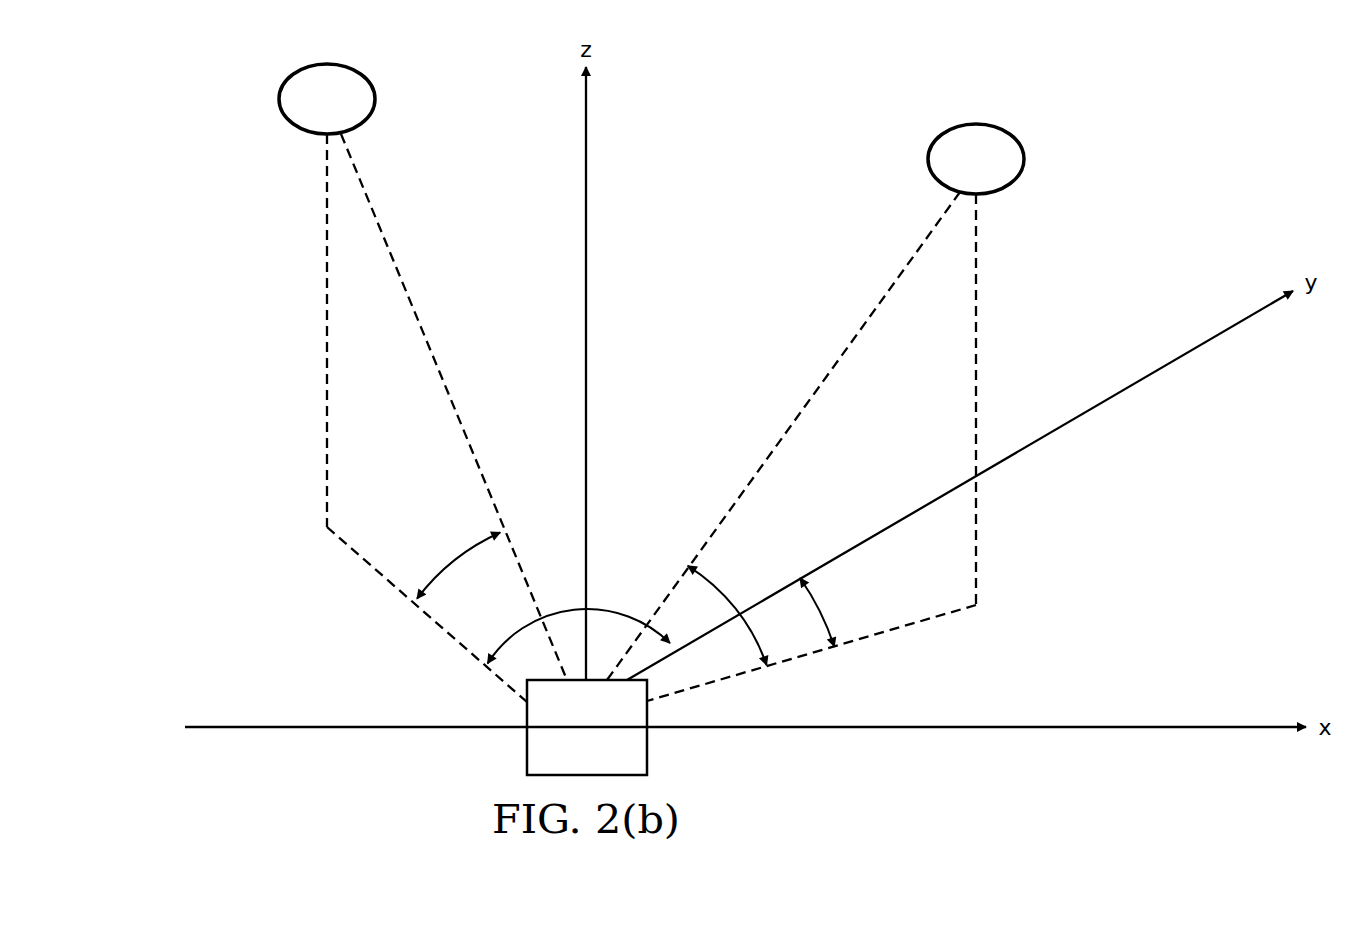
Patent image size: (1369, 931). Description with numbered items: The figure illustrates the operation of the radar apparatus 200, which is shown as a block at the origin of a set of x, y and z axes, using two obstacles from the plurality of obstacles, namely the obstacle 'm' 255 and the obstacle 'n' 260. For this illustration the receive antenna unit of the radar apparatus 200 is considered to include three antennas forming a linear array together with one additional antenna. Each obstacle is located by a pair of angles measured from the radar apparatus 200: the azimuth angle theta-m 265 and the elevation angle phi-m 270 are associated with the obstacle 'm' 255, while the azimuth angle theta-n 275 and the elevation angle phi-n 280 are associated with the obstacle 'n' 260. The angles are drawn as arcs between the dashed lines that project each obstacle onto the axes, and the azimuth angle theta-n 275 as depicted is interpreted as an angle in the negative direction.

The radar apparatus 200 is at (561, 745).
The obstacle 'm' 255 is at (1024, 166).
The obstacle 'n' 260 is at (280, 99).
The azimuth angle θm 265 is at (812, 603).
The elevation angle φm 270 is at (745, 628).
The azimuth angle θn 275 is at (612, 610).
The elevation angle φn 280 is at (452, 565).